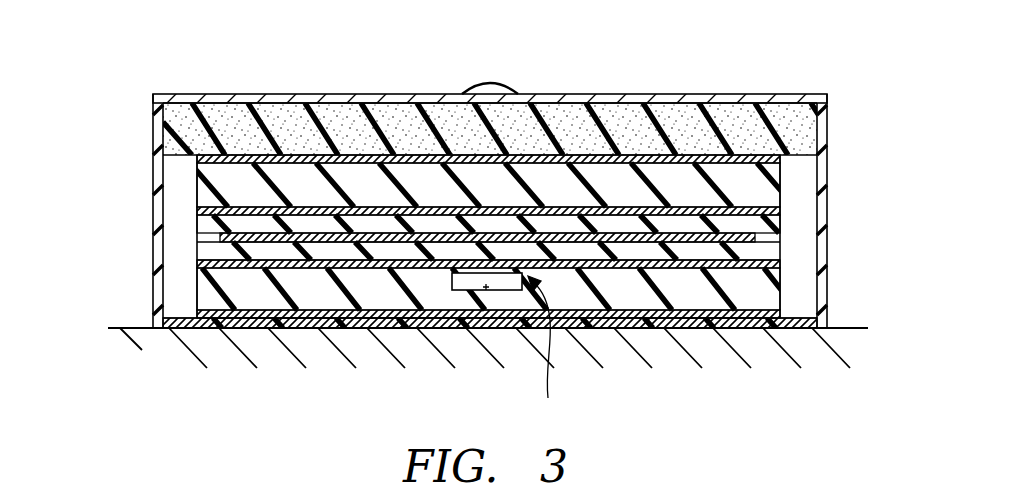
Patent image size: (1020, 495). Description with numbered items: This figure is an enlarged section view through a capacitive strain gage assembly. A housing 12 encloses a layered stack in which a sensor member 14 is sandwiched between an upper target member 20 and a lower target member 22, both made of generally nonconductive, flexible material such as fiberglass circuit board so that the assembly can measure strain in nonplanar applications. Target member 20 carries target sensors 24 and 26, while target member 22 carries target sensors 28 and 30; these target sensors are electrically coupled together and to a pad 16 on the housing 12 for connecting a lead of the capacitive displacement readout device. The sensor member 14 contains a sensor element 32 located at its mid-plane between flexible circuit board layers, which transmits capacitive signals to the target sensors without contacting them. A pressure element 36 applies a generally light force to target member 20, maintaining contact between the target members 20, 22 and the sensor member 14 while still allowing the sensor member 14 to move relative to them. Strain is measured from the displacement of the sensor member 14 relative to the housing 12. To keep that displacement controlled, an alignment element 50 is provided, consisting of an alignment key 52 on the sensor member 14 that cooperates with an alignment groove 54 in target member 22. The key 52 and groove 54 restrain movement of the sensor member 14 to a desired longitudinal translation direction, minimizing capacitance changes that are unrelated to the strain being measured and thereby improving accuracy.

The housing 12 is at (777, 96).
The sensor member 14 is at (777, 237).
The pad 16 is at (490, 85).
The target member 20 is at (777, 173).
The target member 22 is at (775, 297).
The target sensor 24 is at (199, 206).
The target sensor 26 is at (197, 160).
The target sensor 28 is at (199, 264).
The target sensor 30 is at (214, 322).
The sensor element 32 is at (220, 237).
The pressure element 36 is at (303, 96).
The alignment element 50 is at (543, 355).
The alignment key 52 is at (452, 280).
The alignment groove 54 is at (487, 293).